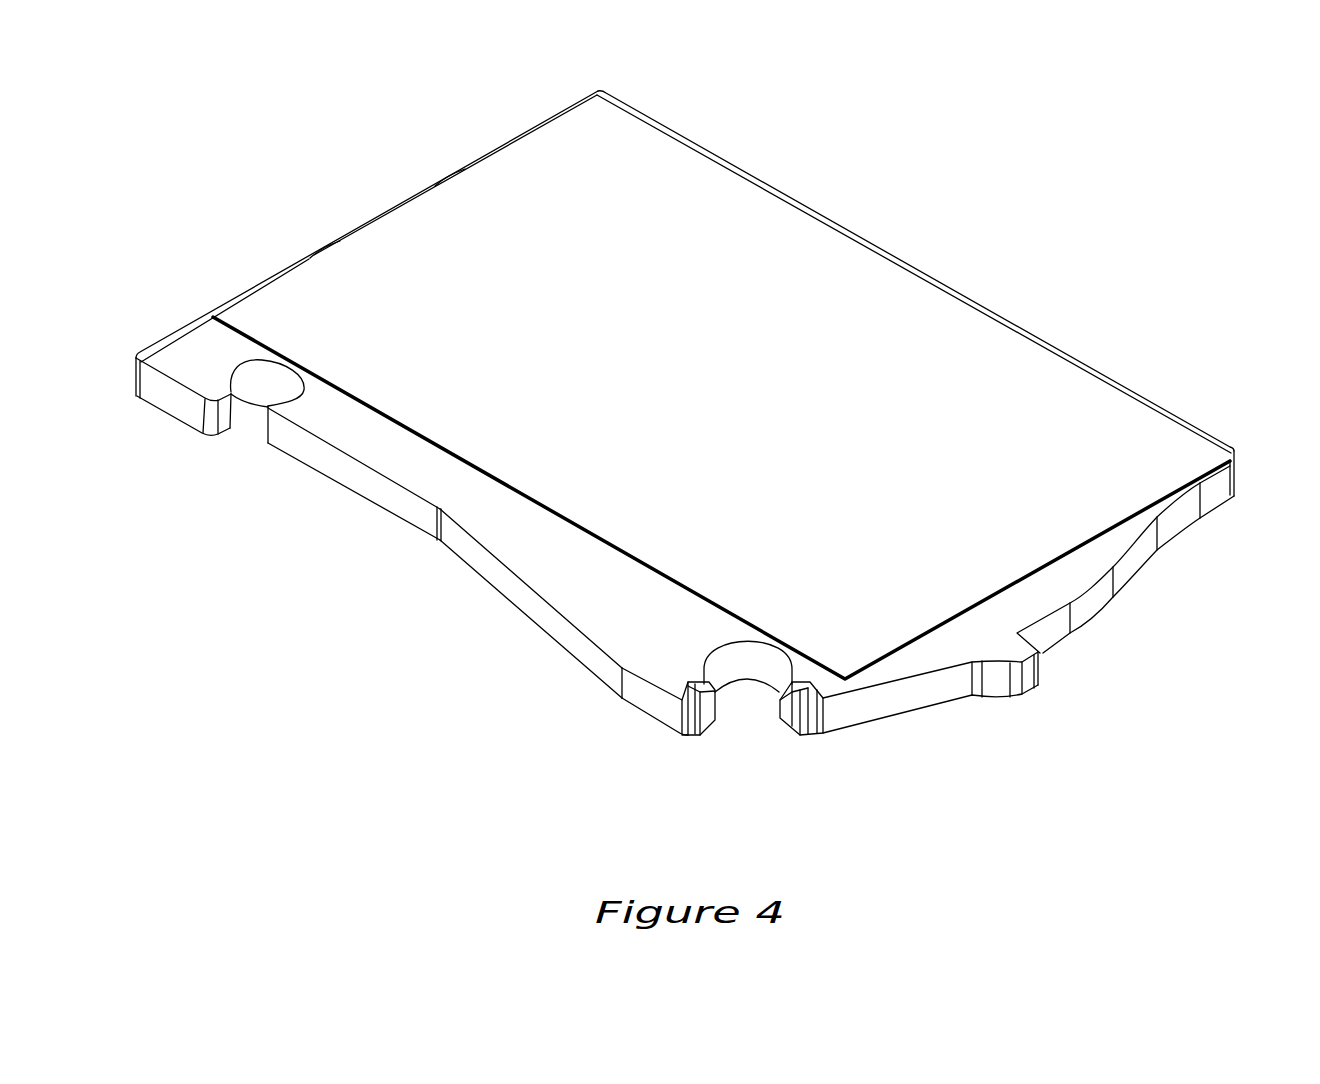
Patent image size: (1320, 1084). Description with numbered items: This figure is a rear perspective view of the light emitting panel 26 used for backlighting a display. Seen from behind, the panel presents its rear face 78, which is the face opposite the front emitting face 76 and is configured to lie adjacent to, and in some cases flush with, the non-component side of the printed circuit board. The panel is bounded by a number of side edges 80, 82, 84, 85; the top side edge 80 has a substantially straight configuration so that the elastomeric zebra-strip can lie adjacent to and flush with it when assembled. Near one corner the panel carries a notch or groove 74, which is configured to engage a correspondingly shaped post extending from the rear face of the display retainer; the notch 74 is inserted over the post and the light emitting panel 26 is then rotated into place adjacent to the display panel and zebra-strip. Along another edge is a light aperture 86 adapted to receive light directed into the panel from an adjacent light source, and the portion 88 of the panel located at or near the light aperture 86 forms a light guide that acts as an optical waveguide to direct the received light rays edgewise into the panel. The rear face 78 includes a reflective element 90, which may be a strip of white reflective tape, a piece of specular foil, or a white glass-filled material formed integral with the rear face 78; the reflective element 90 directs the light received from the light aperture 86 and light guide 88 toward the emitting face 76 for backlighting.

The light emitting panel 26 is at (952, 178).
The notch or groove 74 is at (254, 405).
The front emitting face 76 is at (932, 650).
The rear face 78 is at (598, 587).
The top side edge 80 is at (940, 284).
The side edge 82 is at (418, 525).
The side edge 84 is at (1070, 619).
The side edge 85 is at (308, 256).
The light aperture 86 is at (757, 728).
The light guide 88 is at (688, 640).
The reflective element 90 is at (1130, 440).